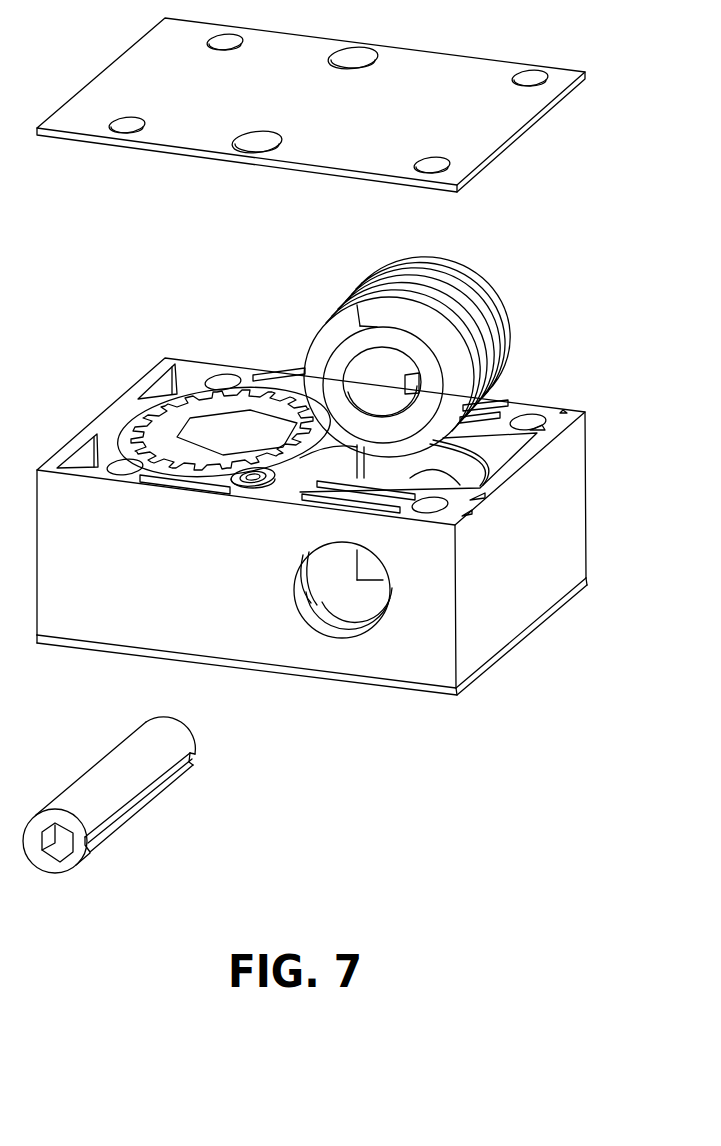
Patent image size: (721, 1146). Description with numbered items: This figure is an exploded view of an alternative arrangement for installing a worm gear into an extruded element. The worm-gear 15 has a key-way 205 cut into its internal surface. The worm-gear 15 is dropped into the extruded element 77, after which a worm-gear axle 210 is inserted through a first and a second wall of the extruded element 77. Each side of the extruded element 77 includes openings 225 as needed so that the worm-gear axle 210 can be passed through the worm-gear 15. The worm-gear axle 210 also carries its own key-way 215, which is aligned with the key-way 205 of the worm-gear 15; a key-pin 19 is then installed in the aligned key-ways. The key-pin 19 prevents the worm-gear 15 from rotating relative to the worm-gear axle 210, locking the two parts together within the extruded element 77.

The worm-gear 15 is at (492, 288).
The key-pin 19 is at (366, 352).
The key-way 205 is at (420, 380).
The extruded element 77 is at (586, 450).
The openings 225 is at (380, 625).
The worm-gear axle 210 is at (65, 877).
The key-way 215 is at (105, 857).